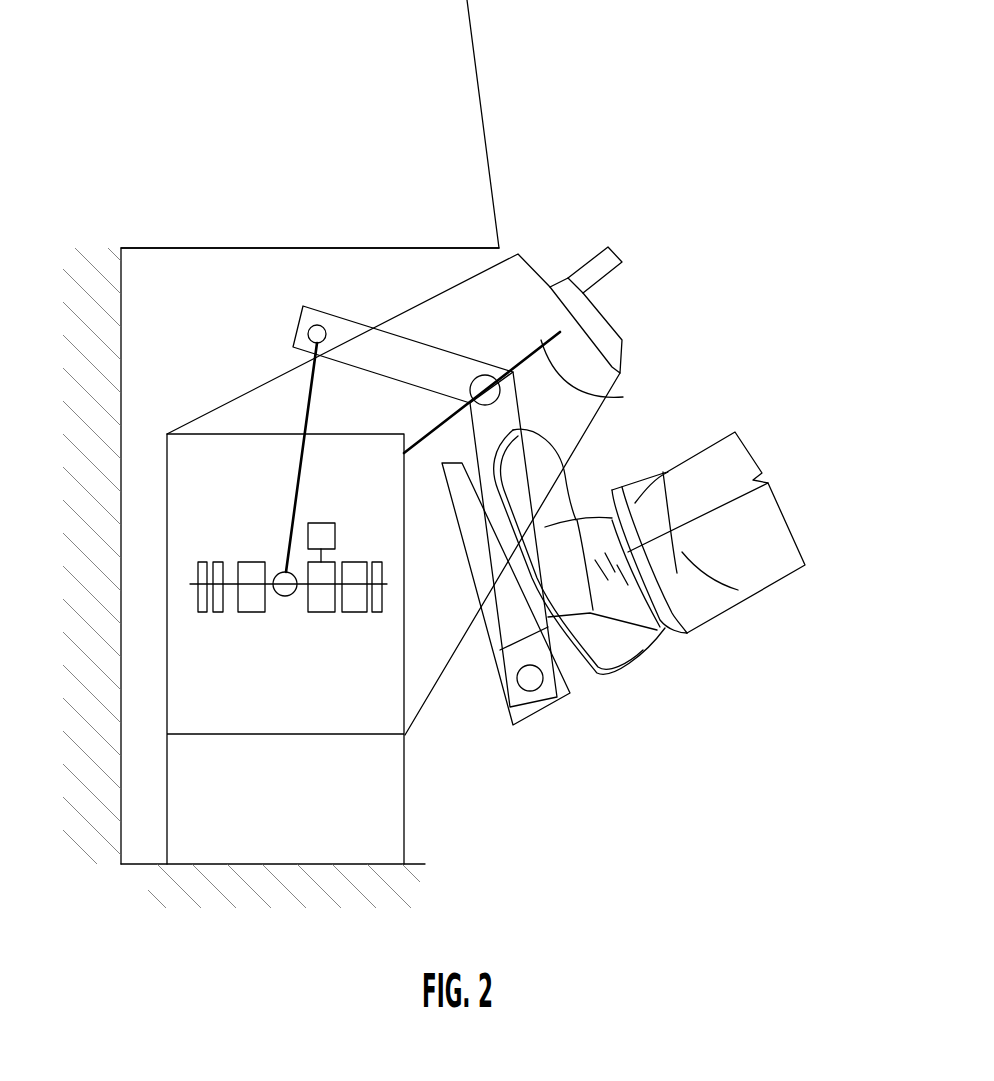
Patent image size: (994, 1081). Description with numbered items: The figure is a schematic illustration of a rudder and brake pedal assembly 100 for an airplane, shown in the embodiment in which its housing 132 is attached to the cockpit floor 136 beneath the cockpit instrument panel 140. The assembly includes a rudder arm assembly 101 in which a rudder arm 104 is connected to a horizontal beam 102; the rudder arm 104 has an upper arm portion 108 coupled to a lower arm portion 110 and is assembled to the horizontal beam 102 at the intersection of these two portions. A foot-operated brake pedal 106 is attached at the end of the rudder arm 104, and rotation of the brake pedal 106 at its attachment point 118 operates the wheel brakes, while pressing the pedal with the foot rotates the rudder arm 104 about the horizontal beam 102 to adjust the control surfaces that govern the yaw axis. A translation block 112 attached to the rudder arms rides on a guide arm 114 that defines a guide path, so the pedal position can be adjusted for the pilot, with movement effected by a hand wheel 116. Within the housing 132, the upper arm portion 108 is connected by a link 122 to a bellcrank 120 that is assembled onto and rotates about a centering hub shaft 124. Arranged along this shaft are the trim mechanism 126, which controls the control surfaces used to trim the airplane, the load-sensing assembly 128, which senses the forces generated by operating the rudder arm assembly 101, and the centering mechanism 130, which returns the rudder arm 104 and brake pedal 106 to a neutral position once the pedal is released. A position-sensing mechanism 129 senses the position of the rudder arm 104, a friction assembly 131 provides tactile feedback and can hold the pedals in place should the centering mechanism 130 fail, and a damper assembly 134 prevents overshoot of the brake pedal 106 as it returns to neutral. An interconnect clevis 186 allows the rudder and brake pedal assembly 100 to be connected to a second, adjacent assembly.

The rudder and brake pedal assembly 100 is at (210, 243).
The rudder arm assembly 101 is at (285, 319).
The horizontal beam 102 is at (485, 375).
The rudder arm 104 is at (558, 500).
The brake pedal 106 is at (545, 710).
The upper arm portion 108 is at (383, 327).
The lower arm portion 110 is at (592, 658).
The translation block 112 is at (522, 304).
The guide arm 114 is at (624, 397).
The hand wheel 116 is at (615, 323).
The attachment point 118 is at (494, 694).
The bellcrank 120 is at (285, 597).
The link 122 is at (297, 477).
The centering hub shaft 124 is at (230, 583).
The trim mechanism 126 is at (322, 522).
The load-sensing assembly 128 is at (358, 562).
The position-sensing mechanism 129 is at (377, 612).
The centering mechanism 130 is at (318, 612).
The friction assembly 131 is at (220, 612).
The housing 132 is at (305, 718).
The damper assembly 134 is at (252, 612).
The cockpit floor 136 is at (387, 864).
The cockpit instrument panel 140 is at (408, 230).
The interconnect clevis 186 is at (199, 598).